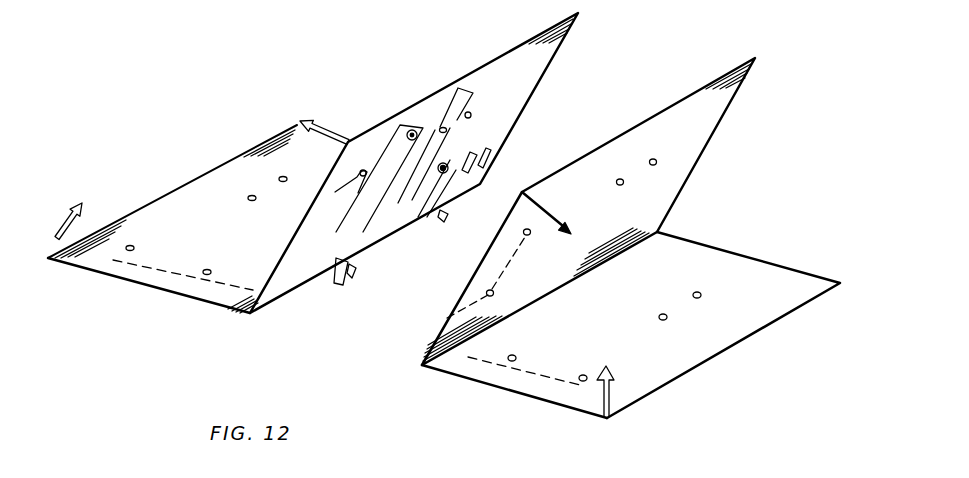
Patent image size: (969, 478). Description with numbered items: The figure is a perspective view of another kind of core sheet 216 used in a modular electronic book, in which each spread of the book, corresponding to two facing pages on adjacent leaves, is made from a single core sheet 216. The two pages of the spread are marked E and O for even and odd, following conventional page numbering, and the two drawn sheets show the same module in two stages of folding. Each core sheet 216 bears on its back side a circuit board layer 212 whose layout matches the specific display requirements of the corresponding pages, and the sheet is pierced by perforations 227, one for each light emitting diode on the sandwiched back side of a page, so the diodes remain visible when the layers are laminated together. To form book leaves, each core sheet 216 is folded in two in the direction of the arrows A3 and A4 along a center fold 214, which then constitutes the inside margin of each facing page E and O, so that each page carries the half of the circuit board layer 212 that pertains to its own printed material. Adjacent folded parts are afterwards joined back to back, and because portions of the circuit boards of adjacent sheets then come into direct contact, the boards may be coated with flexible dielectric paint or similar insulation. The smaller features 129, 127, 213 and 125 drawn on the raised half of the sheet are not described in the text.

The core sheet 216 is at (654, 98).
The center fold 214 is at (248, 318).
The circuit board layer 212 is at (145, 285).
The perforations 227 is at (206, 269).
The aperture 129 is at (411, 130).
The slots 127 is at (492, 153).
The tabs 213 is at (438, 217).
The tab 125 is at (345, 283).
The even page E is at (228, 167).
The odd page O is at (490, 82).
The folding direction arrow A3 is at (55, 238).
The folding direction arrow A4 is at (347, 128).